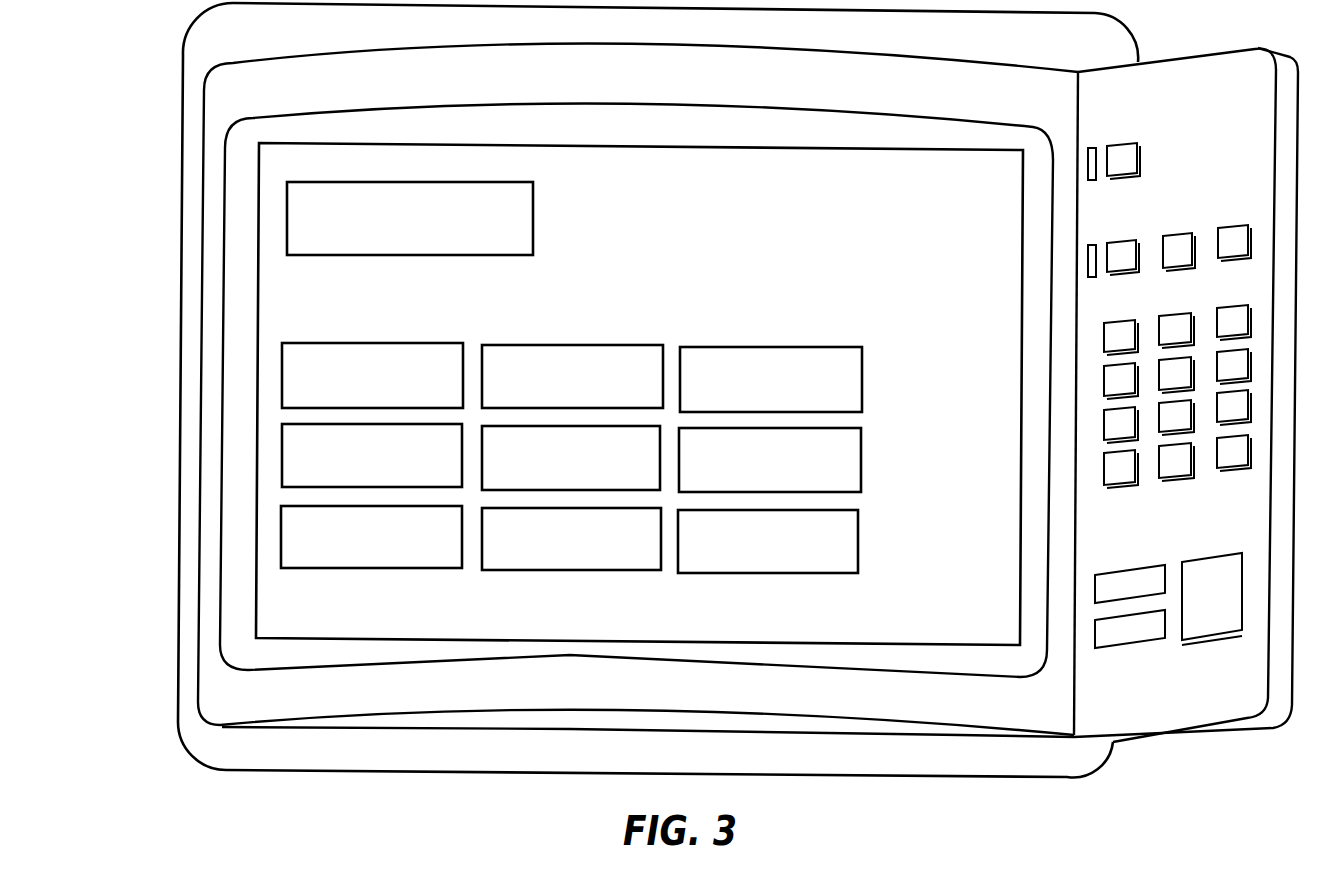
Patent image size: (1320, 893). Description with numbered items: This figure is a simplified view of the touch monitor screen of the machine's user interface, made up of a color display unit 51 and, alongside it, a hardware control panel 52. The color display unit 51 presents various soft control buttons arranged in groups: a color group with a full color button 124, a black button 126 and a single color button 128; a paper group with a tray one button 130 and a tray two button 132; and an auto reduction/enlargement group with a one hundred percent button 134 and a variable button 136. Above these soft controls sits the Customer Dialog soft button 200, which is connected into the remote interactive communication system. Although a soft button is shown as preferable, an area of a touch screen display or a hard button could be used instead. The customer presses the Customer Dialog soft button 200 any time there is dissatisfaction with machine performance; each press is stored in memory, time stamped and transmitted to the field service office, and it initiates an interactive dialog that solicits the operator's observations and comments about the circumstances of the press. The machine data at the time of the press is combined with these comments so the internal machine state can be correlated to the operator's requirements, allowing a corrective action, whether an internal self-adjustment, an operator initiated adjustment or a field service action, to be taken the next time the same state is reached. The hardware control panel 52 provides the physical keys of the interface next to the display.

The color display unit 51 is at (951, 625).
The hardware control panel 52 is at (1167, 677).
The Customer Dialog soft button 200 is at (523, 210).
The full color soft control button 124 is at (441, 343).
The black soft control button 126 is at (282, 455).
The single color soft control button 128 is at (368, 569).
The tray 1 soft control button 130 is at (655, 477).
The tray 2 soft control button 132 is at (568, 570).
The 100% soft control button 134 is at (851, 453).
The variable soft control button 136 is at (850, 532).